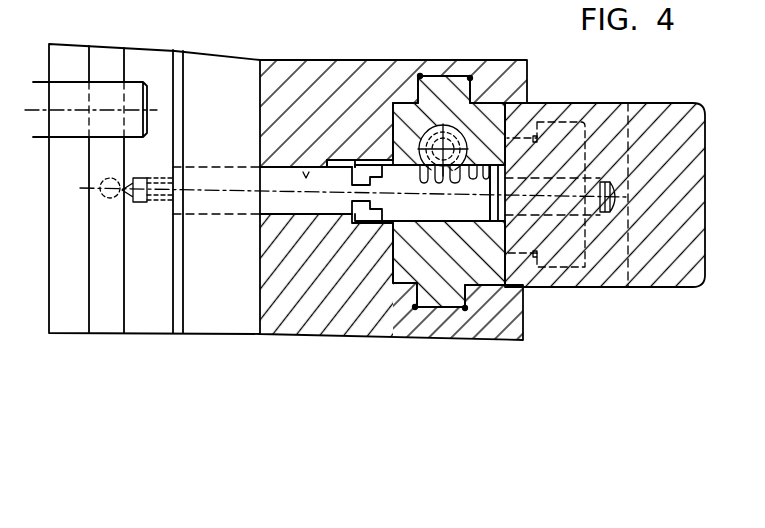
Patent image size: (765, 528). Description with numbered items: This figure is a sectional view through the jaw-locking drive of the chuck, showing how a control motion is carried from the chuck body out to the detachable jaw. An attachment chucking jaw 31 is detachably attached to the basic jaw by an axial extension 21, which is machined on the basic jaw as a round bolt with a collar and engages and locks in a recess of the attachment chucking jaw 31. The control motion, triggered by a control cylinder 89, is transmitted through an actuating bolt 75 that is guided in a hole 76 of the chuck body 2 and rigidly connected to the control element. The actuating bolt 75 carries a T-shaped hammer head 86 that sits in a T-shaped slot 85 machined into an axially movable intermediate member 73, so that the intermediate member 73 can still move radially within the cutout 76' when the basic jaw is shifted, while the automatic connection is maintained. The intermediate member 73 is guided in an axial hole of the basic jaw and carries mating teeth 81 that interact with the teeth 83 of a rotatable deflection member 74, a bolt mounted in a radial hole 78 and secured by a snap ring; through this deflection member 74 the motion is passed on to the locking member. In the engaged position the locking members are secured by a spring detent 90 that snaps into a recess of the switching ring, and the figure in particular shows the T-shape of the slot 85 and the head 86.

The chuck body 2 is at (305, 300).
The axial extension 21 is at (560, 253).
The attachment chucking jaw 31 is at (653, 268).
The intermediate member 73 is at (392, 226).
The deflection member 74 is at (442, 122).
The actuating bolt 75 is at (275, 180).
The hole 76 is at (217, 168).
The cutout 76' is at (302, 91).
The radial hole 78 is at (410, 100).
The mating teeth 81 is at (462, 177).
The teeth 83 is at (430, 177).
The T-shaped slot 85 is at (381, 225).
The T-shaped hammer head 86 is at (338, 166).
The control cylinder 89 is at (46, 72).
The spring detent 90 is at (105, 211).